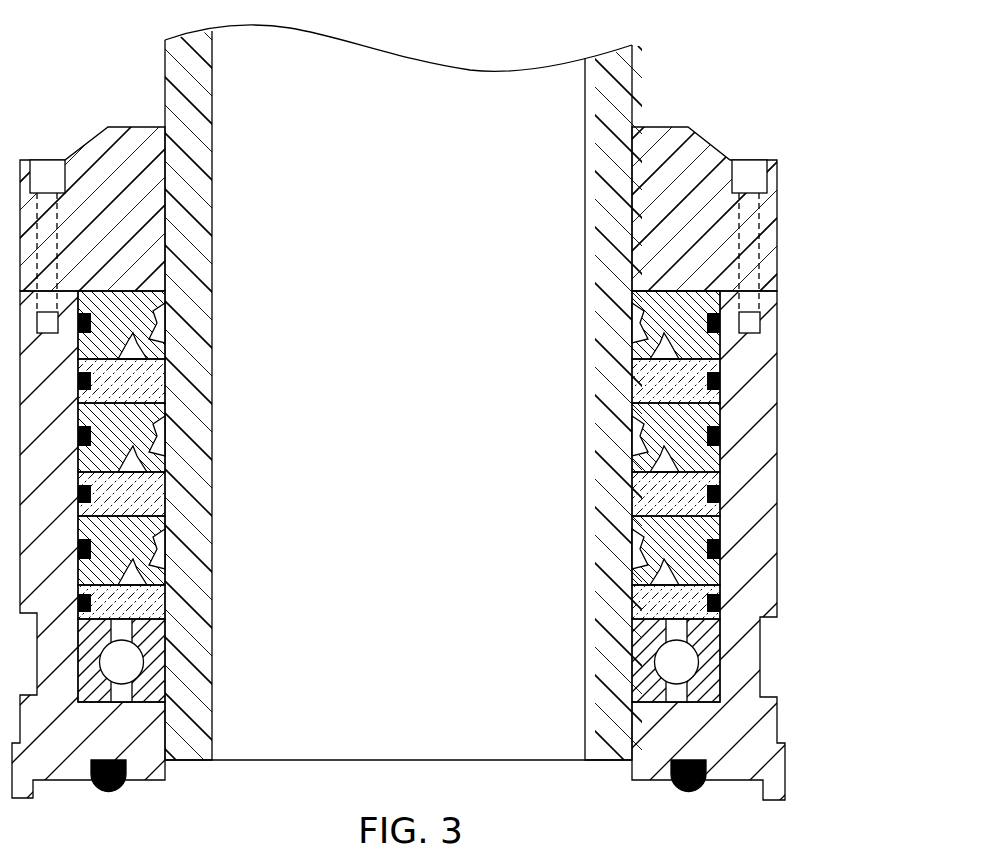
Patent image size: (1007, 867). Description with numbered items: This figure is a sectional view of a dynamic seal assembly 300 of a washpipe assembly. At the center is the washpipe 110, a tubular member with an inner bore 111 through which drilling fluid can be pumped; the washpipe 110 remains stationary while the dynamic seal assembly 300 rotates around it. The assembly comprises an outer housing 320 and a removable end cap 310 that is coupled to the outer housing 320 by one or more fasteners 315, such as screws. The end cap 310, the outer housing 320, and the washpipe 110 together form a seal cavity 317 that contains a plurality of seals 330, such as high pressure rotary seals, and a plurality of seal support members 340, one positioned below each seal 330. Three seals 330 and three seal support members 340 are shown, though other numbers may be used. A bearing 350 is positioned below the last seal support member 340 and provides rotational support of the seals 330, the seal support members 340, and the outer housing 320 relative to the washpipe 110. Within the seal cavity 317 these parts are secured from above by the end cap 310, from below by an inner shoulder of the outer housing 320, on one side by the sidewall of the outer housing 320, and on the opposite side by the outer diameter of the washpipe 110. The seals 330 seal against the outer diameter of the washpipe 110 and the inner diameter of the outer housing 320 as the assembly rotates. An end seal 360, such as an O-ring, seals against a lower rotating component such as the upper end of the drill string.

The dynamic seal assembly 300 is at (881, 86).
The washpipe 110 is at (632, 80).
The inner bore 111 is at (212, 50).
The end cap 310 is at (777, 186).
The fasteners 315 is at (748, 163).
The seal cavity 317 is at (658, 703).
The outer housing 320 is at (777, 365).
The seals 330 is at (703, 347).
The seal support members 340 is at (693, 387).
The bearing 350 is at (710, 685).
The end seal 360 is at (688, 792).